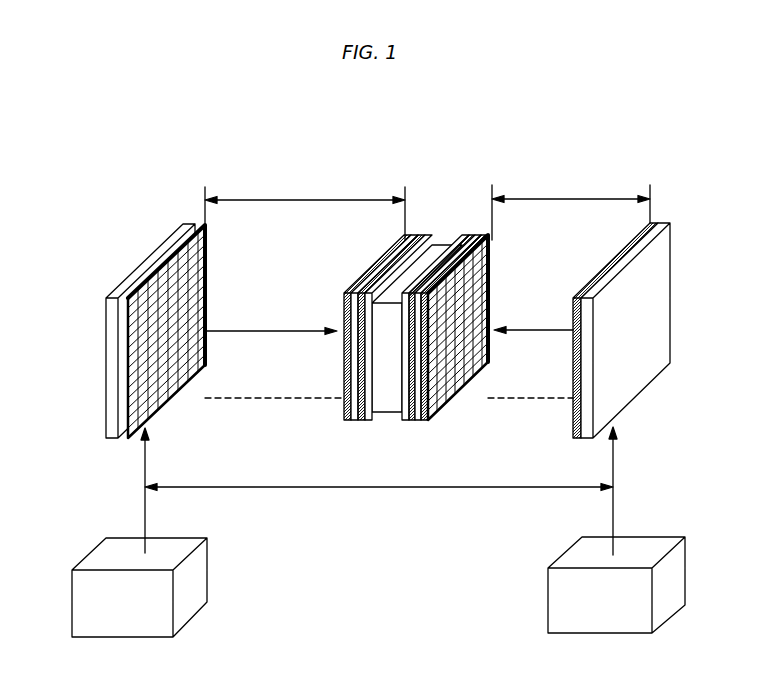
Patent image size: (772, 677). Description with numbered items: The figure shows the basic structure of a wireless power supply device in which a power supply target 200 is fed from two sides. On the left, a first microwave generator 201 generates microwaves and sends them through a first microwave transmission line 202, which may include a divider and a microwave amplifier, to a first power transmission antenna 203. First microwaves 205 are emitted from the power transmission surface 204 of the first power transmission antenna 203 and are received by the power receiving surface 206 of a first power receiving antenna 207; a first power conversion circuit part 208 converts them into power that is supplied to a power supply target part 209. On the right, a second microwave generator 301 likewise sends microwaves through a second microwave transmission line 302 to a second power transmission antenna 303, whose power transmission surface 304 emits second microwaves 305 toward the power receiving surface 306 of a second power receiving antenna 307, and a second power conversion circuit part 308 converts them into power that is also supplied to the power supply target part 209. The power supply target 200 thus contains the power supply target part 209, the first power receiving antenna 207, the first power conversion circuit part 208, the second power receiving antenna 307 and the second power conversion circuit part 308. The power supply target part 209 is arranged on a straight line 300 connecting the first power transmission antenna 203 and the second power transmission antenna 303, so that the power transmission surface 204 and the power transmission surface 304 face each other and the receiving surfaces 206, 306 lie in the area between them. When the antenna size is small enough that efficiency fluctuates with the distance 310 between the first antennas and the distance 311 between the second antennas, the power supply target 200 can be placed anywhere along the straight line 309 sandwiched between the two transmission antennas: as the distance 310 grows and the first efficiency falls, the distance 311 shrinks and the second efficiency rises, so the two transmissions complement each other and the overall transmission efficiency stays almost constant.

The power supply target 200 is at (427, 281).
The first microwave generator 201 is at (88, 594).
The first microwave transmission line 202 is at (143, 473).
The first power transmission antenna 203 is at (107, 347).
The power transmission surface 204 is at (128, 302).
The first microwaves 205 is at (259, 329).
The power receiving surface 206 is at (360, 276).
The first power receiving antenna 207 is at (413, 233).
The first power conversion circuit part 208 is at (423, 234).
The power supply target part 209 is at (383, 414).
The straight line 300 is at (270, 399).
The second microwave generator 301 is at (670, 580).
The second microwave transmission line 302 is at (615, 507).
The second power transmission antenna 303 is at (662, 292).
The power transmission surface 304 is at (575, 356).
The second microwaves 305 is at (537, 332).
The power receiving surface 306 is at (492, 295).
The second power receiving antenna 307 is at (478, 233).
The second power conversion circuit part 308 is at (407, 423).
The straight line 309 is at (380, 489).
The distance 310 is at (309, 197).
The distance 311 is at (574, 197).